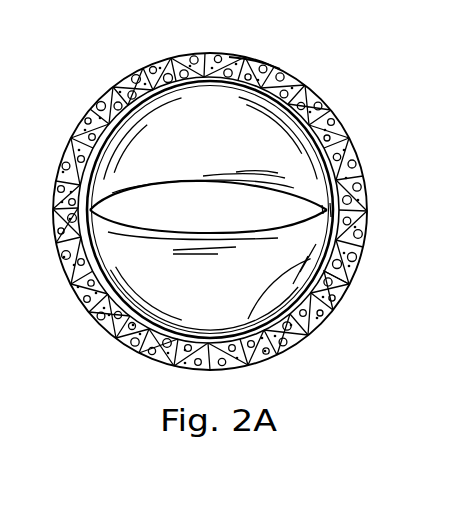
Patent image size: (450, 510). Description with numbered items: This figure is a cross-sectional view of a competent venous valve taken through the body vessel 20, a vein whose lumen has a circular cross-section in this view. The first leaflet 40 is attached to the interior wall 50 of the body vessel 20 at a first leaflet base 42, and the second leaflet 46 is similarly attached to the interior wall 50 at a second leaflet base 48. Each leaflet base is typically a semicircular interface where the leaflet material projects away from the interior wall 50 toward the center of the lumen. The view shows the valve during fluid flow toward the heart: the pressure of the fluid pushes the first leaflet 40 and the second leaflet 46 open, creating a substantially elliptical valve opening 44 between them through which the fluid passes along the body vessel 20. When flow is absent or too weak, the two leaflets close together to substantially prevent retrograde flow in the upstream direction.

The body vessel 20 is at (300, 88).
The first leaflet base 42 is at (262, 63).
The interior wall 50 is at (335, 121).
The first leaflet 40 is at (306, 174).
The valve opening 44 is at (316, 209).
The second leaflet 46 is at (318, 249).
The second leaflet base 48 is at (351, 277).